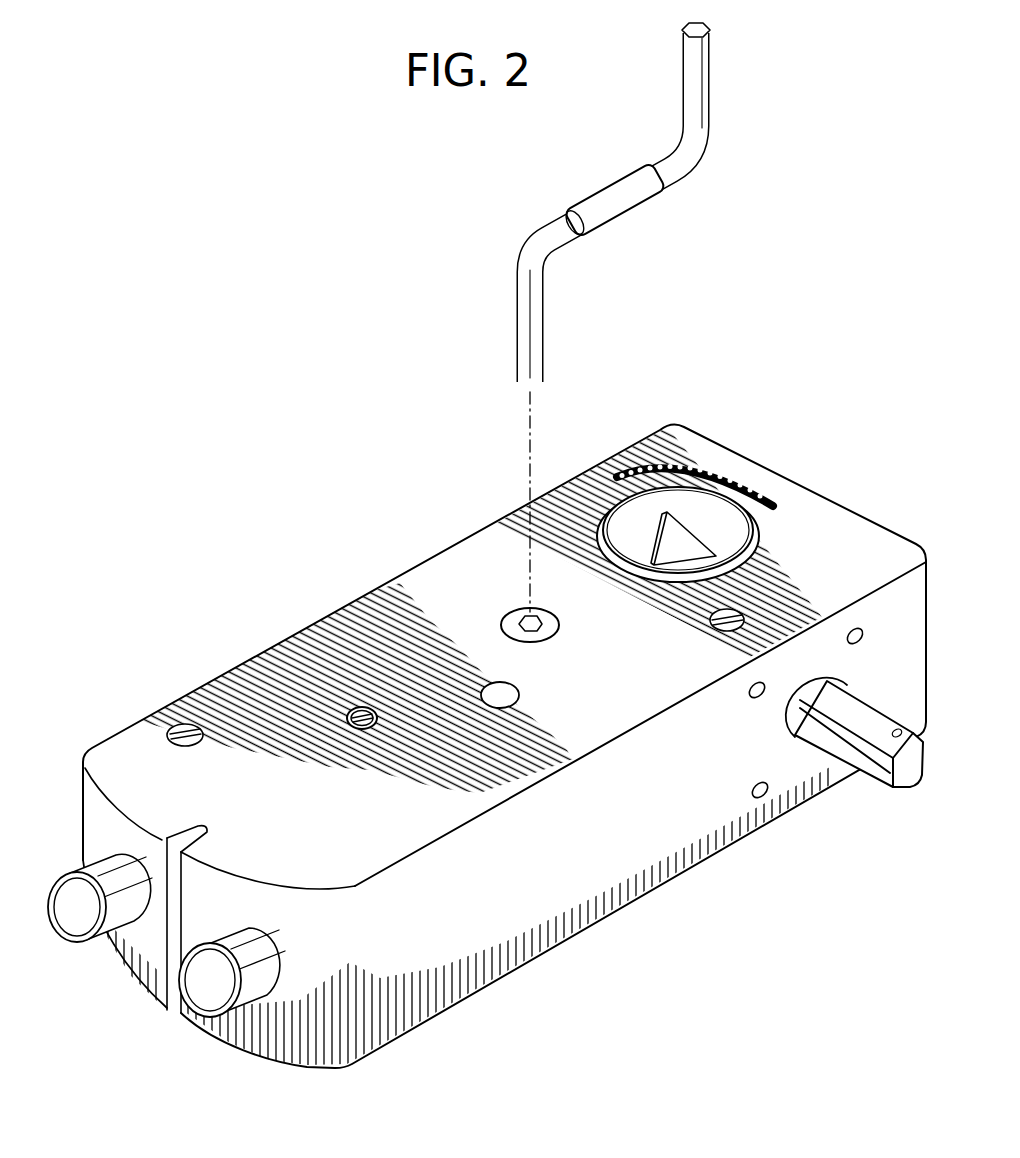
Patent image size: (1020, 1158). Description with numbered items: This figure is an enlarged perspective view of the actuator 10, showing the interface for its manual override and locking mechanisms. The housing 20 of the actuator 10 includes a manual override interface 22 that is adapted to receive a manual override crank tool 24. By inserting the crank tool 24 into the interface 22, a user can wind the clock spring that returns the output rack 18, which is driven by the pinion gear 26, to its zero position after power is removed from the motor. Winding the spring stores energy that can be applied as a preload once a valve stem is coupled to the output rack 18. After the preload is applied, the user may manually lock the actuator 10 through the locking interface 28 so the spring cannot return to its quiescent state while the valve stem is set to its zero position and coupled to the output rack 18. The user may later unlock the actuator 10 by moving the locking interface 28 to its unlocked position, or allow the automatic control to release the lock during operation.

The actuator 10 is at (205, 244).
The output rack 18 is at (903, 770).
The housing 20 is at (351, 623).
The manual override interface 22 is at (528, 613).
The manual override crank tool 24 is at (533, 240).
The pinion gear 26 is at (715, 503).
The locking interface 28 is at (348, 704).